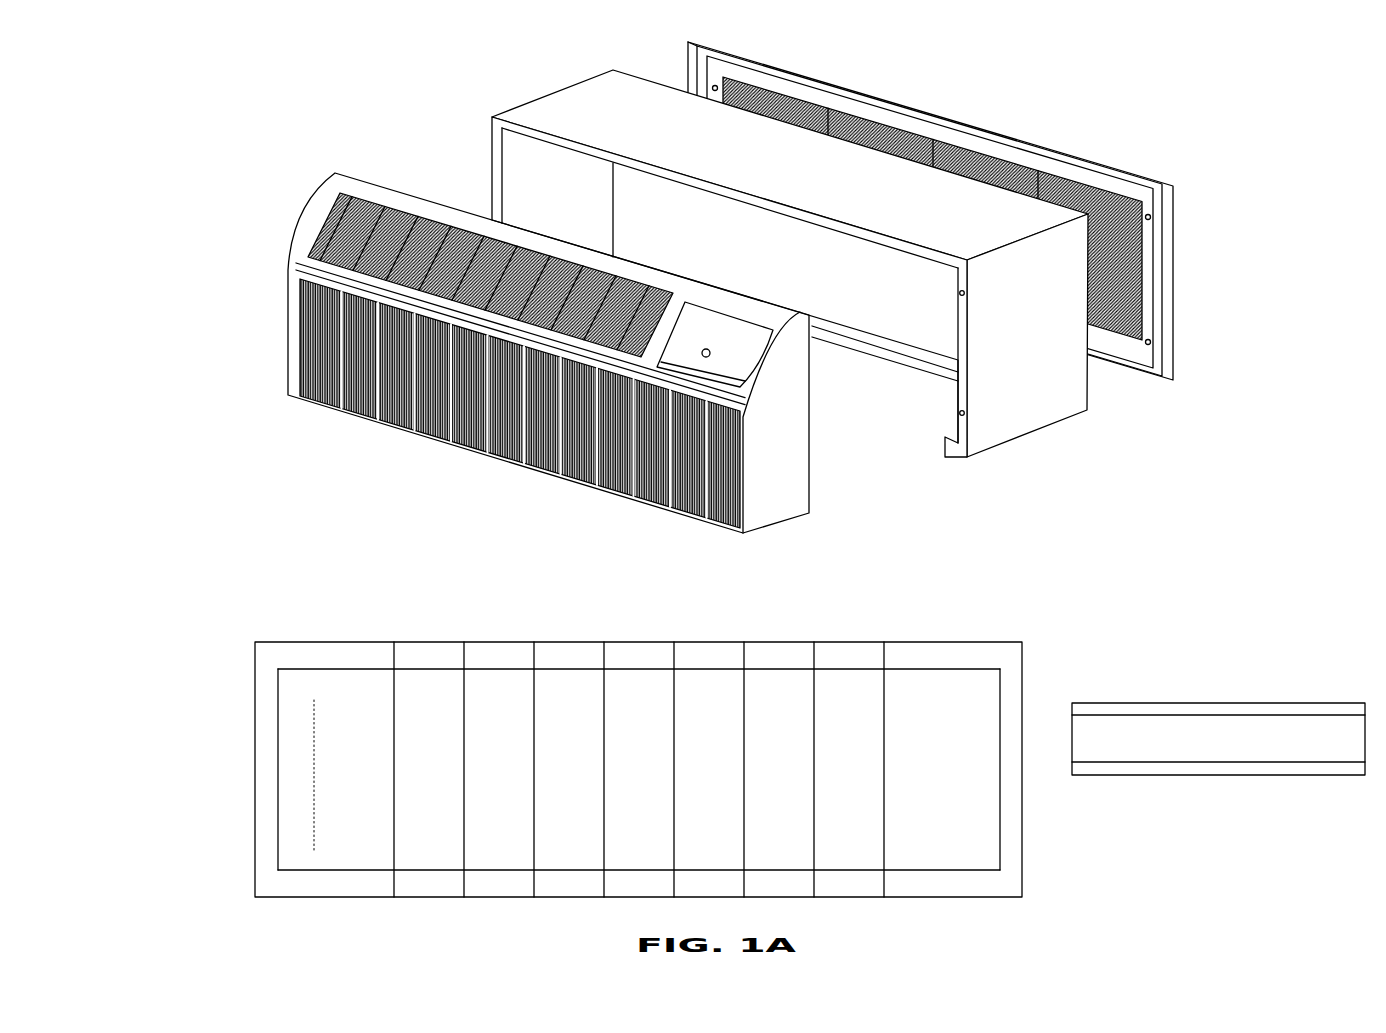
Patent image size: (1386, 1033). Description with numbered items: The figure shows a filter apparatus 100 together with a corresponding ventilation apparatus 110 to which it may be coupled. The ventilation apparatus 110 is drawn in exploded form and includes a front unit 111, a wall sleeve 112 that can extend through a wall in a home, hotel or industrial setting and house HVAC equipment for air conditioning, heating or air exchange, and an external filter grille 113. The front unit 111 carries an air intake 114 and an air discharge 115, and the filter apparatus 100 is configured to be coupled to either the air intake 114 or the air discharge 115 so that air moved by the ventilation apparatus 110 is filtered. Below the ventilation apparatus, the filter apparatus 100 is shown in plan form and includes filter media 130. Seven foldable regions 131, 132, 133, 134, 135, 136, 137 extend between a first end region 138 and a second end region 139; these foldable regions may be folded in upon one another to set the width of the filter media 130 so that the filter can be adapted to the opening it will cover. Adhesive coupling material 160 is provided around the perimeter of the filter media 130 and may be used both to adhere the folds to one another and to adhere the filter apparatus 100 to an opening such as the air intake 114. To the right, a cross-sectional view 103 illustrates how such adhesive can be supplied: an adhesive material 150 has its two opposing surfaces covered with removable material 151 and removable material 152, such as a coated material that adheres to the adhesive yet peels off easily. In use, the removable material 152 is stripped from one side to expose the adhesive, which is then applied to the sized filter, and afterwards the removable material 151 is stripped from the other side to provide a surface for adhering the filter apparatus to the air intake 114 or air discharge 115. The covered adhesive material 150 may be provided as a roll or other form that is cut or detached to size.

The filter apparatus 100 is at (1027, 595).
The cross-sectional view 103 is at (1260, 654).
The ventilation apparatus 110 is at (1180, 51).
The front unit 111 is at (778, 525).
The wall sleeve 112 is at (1015, 437).
The external filter grille 113 is at (1162, 378).
The air intake 114 is at (440, 423).
The air discharge 115 is at (350, 238).
The filter media 130 is at (654, 787).
The foldable region 131 is at (429, 641).
The foldable region 132 is at (499, 641).
The foldable region 133 is at (569, 641).
The foldable region 134 is at (639, 641).
The foldable region 135 is at (709, 641).
The foldable region 136 is at (779, 641).
The foldable region 137 is at (849, 641).
The end region 138 is at (339, 781).
The end region 139 is at (964, 787).
The adhesive material 150 is at (1237, 750).
The removable material 151 is at (1165, 710).
The removable material 152 is at (1163, 770).
The adhesive material 160 is at (265, 748).